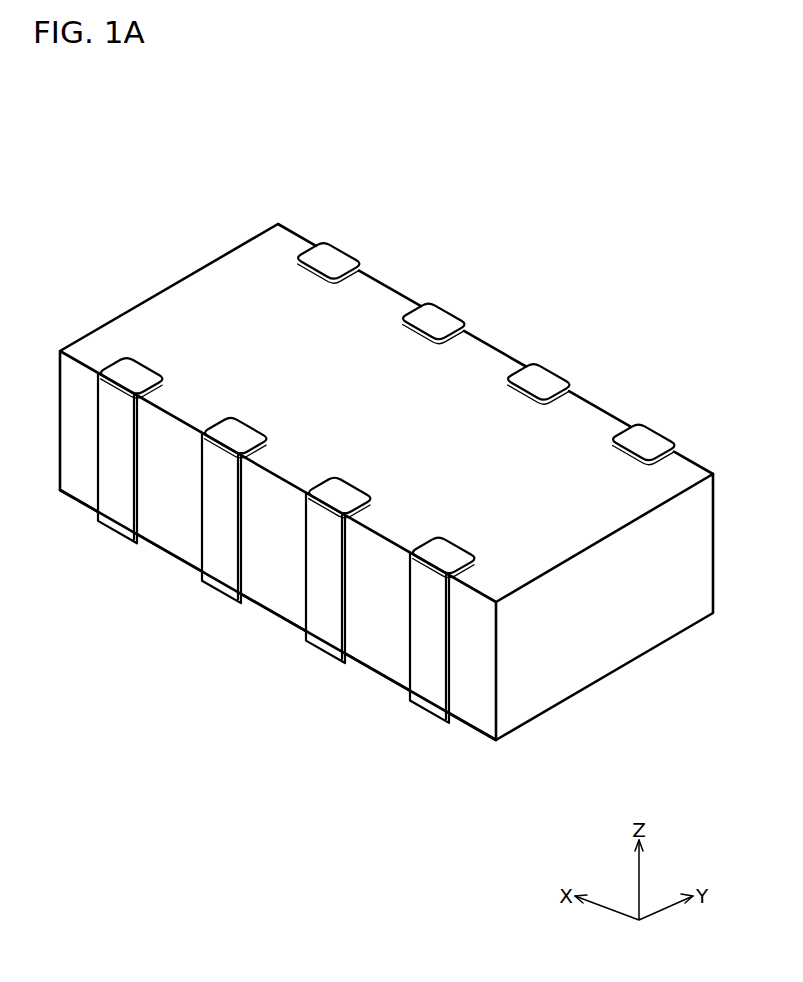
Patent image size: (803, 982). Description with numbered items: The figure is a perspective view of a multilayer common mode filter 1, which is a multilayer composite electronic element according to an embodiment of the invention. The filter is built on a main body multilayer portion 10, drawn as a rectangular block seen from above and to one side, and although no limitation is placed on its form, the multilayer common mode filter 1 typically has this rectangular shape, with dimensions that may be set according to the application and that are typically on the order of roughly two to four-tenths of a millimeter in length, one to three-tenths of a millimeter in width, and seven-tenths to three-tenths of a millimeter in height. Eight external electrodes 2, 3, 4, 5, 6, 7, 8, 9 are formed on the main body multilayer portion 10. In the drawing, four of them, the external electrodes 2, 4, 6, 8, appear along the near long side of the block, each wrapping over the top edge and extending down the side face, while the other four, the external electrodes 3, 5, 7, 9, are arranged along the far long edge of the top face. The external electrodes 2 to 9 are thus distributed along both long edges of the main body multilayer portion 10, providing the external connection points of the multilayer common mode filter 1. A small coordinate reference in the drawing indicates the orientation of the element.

The multilayer common mode filter 1 is at (583, 240).
The main body multilayer portion 10 is at (202, 292).
The external electrode 2 is at (422, 647).
The external electrode 3 is at (643, 438).
The external electrode 4 is at (317, 588).
The external electrode 5 is at (538, 378).
The external electrode 6 is at (213, 527).
The external electrode 7 is at (433, 317).
The external electrode 8 is at (108, 468).
The external electrode 9 is at (328, 257).